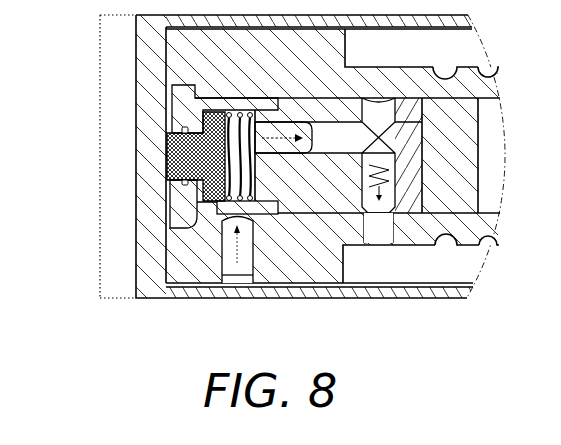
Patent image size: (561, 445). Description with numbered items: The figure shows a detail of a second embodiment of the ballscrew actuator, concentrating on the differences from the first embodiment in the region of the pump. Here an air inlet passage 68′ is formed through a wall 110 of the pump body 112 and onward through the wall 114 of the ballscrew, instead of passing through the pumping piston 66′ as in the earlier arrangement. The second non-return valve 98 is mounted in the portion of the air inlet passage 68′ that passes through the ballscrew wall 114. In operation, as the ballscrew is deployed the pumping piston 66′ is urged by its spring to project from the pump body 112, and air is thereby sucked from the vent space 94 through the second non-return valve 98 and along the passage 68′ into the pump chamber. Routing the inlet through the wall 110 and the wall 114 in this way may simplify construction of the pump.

The pumping piston 66′ is at (178, 153).
The pump body 112 is at (207, 204).
The wall of the pump body 110 is at (185, 228).
The wall of the ballscrew 114 is at (186, 268).
The second non-return valve 98 is at (244, 266).
The air inlet passage 68′ is at (253, 266).
The vent space 94 is at (430, 268).